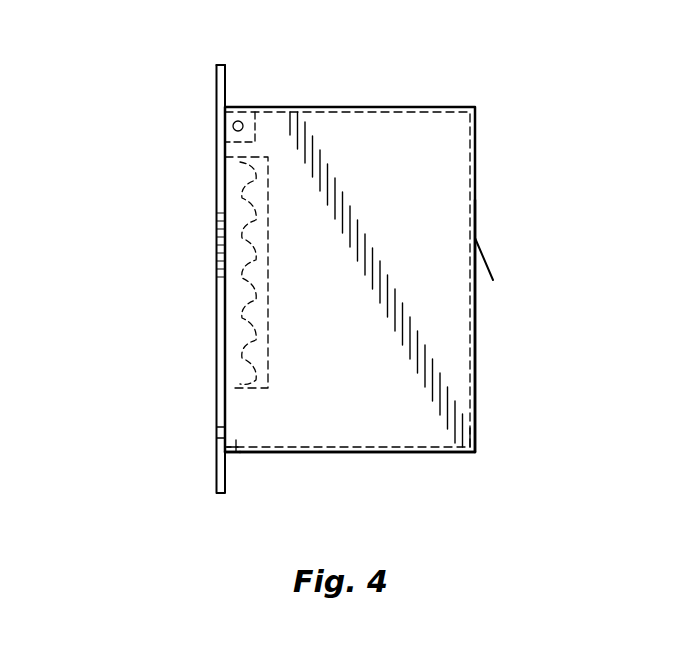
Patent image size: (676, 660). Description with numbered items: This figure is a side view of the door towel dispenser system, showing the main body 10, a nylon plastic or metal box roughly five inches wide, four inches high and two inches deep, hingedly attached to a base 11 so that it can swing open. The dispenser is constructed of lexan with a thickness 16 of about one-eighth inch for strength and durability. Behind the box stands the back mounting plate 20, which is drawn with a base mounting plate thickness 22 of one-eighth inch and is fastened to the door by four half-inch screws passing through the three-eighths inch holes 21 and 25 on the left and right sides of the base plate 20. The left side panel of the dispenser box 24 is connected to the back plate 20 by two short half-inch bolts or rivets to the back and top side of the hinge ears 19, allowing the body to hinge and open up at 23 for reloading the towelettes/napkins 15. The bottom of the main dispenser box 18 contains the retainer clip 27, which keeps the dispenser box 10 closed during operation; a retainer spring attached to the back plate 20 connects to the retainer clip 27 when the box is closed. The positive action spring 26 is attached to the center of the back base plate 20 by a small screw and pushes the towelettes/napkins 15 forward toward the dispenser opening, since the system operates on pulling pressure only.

The main body 10 is at (365, 107).
The base 11 is at (225, 82).
The towelette/napkin 15 is at (492, 267).
The thickness 16 is at (475, 375).
The bottom of the main dispenser box 18 is at (392, 453).
The hinge ears 19 is at (216, 113).
The back mounting plate 20 is at (230, 117).
The holes 21 is at (222, 127).
The base mounting plate thickness 22 is at (215, 187).
The hinge opening location 23 is at (228, 212).
The left side panel of the dispenser box 24 is at (325, 297).
The holes 25 is at (223, 433).
The positive action spring 26 is at (225, 338).
The retainer clip 27 is at (232, 455).